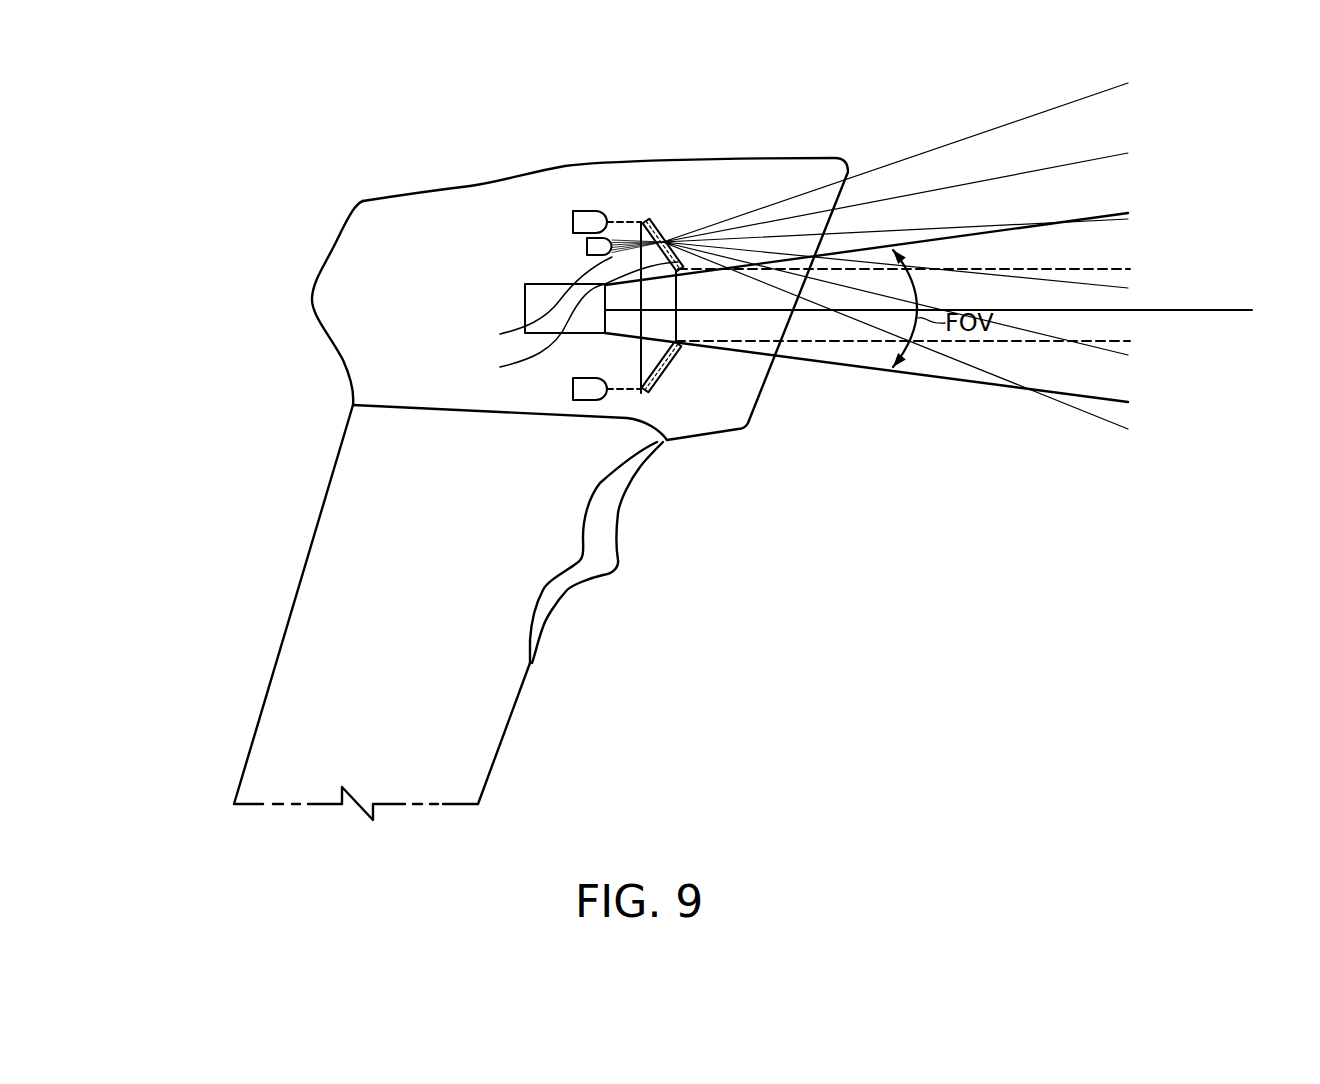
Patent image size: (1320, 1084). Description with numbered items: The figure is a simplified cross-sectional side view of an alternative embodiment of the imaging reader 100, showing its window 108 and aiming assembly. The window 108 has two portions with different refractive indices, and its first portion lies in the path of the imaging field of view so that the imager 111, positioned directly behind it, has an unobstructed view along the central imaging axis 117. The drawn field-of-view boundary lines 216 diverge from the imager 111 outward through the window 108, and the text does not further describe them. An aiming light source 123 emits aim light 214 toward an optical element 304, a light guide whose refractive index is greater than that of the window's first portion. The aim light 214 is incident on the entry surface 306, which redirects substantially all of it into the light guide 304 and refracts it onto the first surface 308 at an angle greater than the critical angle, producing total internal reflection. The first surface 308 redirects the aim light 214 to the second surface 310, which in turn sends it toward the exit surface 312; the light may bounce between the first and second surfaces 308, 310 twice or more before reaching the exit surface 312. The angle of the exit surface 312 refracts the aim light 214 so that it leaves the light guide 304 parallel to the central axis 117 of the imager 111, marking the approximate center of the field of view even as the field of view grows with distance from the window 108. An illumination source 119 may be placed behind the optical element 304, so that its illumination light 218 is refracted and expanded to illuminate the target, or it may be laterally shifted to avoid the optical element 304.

The imaging reader 100 is at (240, 202).
The window 108 is at (670, 320).
The imager 111 is at (524, 290).
The imaging axis 117 is at (1197, 312).
The illumination source 119 is at (586, 246).
The aiming light source 123 is at (572, 221).
The aim light 214 is at (617, 222).
The field of view boundary 216 is at (973, 233).
The illumination light 218 is at (531, 303).
The optical element 304 is at (648, 220).
The entry surface 306 is at (643, 220).
The first surface 308 is at (727, 232).
The second surface 310 is at (564, 322).
The exit surface 312 is at (683, 270).